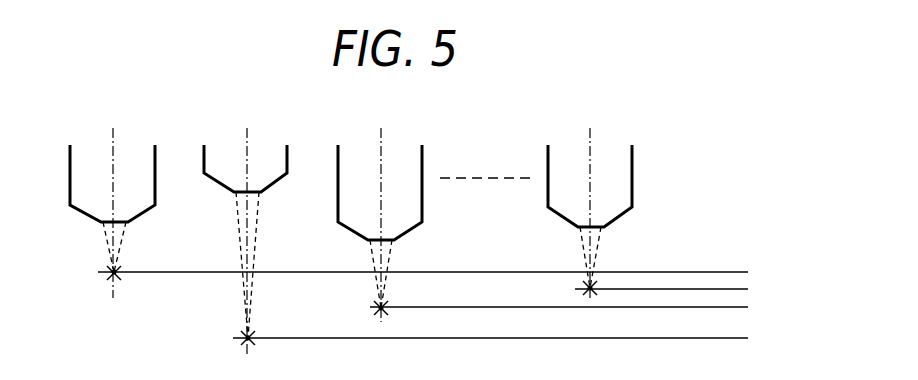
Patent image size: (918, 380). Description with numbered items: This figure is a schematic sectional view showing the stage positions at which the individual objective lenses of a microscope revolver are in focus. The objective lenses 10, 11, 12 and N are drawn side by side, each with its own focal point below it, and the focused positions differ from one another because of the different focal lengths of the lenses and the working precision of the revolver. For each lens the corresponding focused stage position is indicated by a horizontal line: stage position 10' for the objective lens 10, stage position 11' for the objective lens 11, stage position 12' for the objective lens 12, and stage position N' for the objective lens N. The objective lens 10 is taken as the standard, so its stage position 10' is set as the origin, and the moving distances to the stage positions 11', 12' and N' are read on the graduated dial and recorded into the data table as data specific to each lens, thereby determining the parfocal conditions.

The objective lens 10 is at (123, 200).
The objective lens 11 is at (264, 228).
The objective lens 12 is at (400, 212).
The objective lens N is at (604, 198).
The stage position 10' is at (444, 252).
The stage position 11' is at (513, 335).
The stage position 12' is at (581, 305).
The stage position N' is at (683, 276).